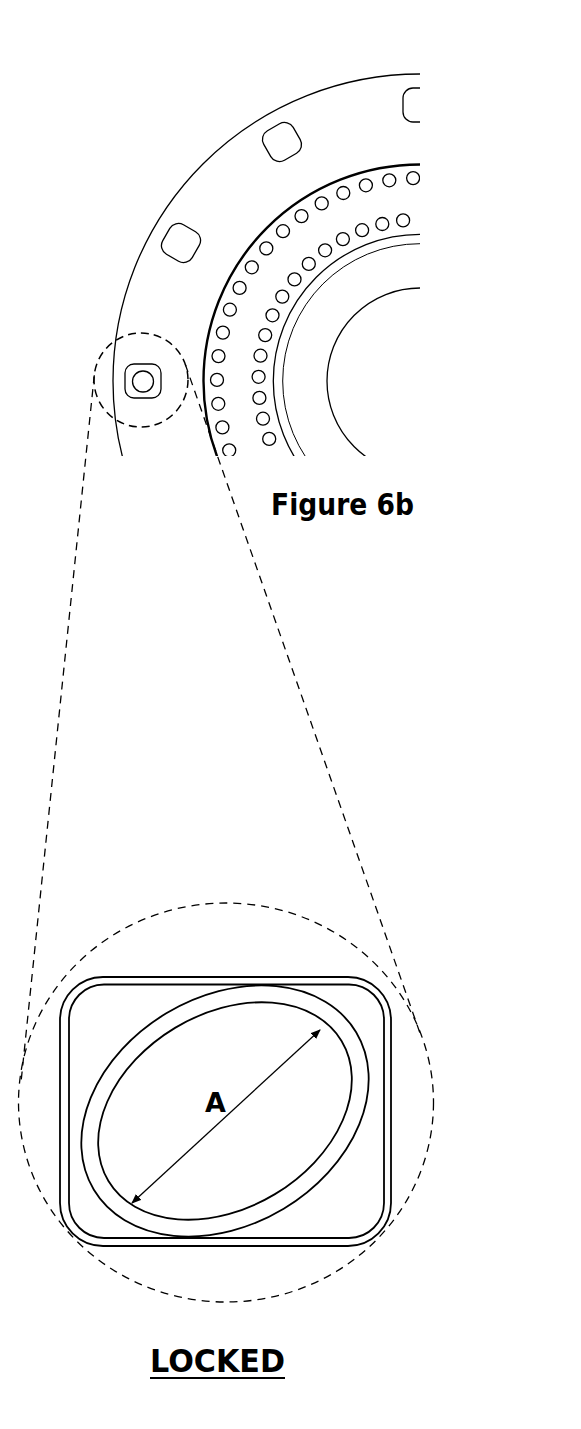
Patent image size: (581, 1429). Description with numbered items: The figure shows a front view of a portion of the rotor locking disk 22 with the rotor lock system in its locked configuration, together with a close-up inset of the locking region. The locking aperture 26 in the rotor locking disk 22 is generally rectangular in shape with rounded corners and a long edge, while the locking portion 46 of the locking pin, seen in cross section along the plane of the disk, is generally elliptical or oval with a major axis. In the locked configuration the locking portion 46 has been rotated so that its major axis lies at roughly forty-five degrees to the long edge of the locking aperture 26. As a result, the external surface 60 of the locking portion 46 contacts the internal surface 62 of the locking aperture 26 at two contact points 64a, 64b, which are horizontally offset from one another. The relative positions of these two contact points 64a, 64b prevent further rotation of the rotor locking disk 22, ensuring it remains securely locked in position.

The rotor locking disk 22 is at (340, 92).
The locking aperture 26 is at (172, 247).
The locking portion 46 is at (334, 1195).
The external surface 60 is at (340, 1010).
The internal surface 62 is at (80, 993).
The contact point 64a is at (267, 976).
The contact point 64b is at (178, 1244).